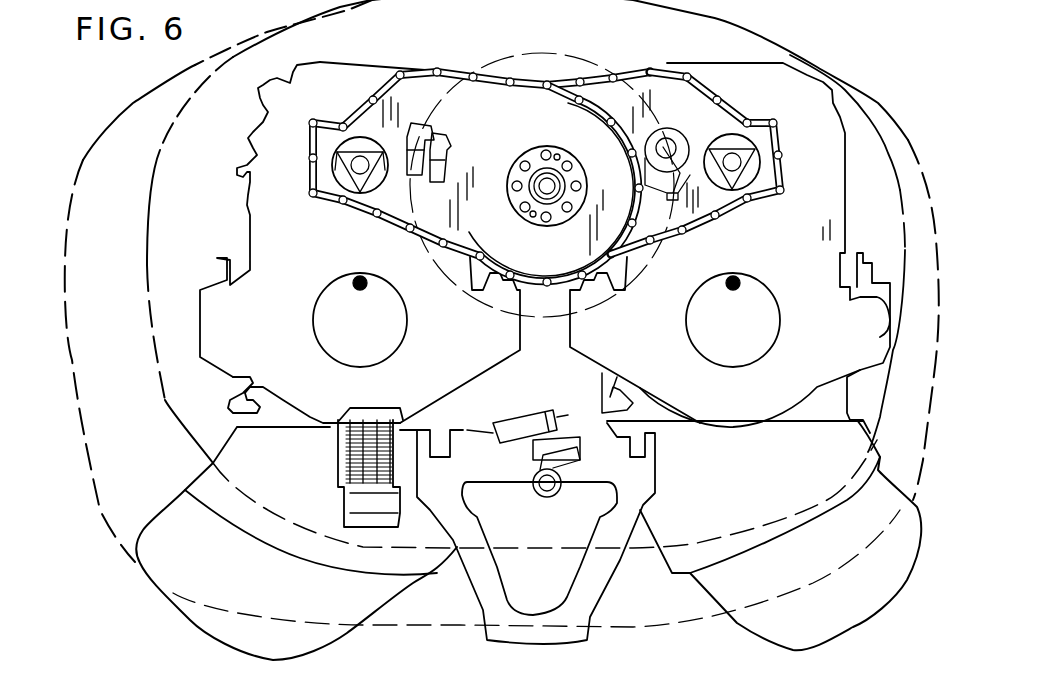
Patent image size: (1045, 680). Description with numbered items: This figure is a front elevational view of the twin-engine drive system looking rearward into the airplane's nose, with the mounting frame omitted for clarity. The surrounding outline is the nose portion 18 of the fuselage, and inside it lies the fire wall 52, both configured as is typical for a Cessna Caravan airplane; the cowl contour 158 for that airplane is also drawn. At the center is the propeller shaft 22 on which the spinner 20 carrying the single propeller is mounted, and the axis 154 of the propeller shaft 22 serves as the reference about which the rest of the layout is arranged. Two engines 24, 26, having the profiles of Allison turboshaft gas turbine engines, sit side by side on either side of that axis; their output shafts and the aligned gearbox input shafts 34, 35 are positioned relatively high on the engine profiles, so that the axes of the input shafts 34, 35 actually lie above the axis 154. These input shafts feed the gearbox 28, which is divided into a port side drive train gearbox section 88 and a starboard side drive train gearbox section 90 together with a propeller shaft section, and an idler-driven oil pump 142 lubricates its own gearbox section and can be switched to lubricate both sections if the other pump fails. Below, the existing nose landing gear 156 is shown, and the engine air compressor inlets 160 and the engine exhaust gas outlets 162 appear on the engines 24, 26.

The nose portion 18 is at (150, 112).
The spinner 20 is at (577, 50).
The propeller shaft 22 is at (558, 167).
The engine 24 is at (321, 250).
The engine 26 is at (778, 248).
The gearbox 28 is at (535, 72).
The gearbox input shaft 34 is at (358, 137).
The gearbox input shaft 35 is at (732, 150).
The fire wall 52 is at (233, 47).
The port side drive train gearbox section 88 is at (640, 66).
The starboard side drive train gearbox section 90 is at (425, 66).
The oil pump 142 is at (452, 150).
The axis of propeller shaft 154 is at (549, 186).
The nose landing gear 156 is at (600, 590).
The cowl contour 158 is at (903, 343).
The engine air compressor inlets 160 is at (325, 348).
The engine exhaust gas outlets 162 is at (182, 613).